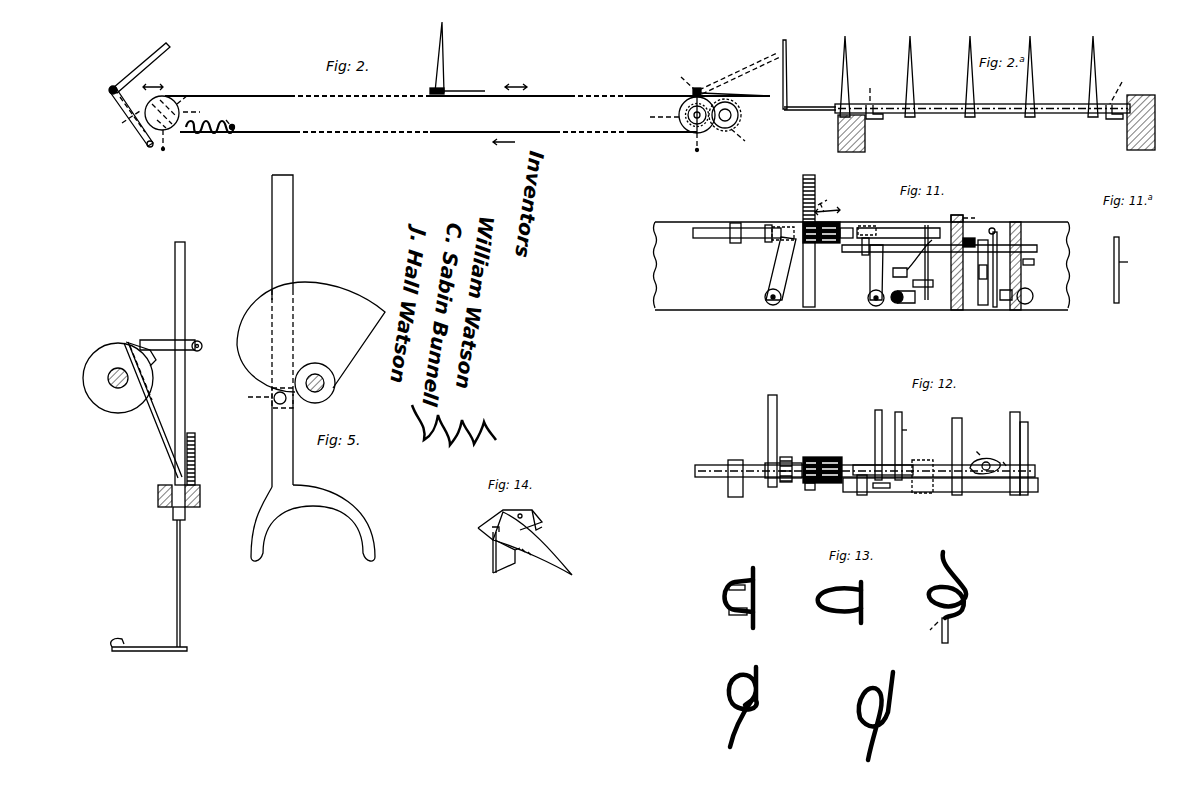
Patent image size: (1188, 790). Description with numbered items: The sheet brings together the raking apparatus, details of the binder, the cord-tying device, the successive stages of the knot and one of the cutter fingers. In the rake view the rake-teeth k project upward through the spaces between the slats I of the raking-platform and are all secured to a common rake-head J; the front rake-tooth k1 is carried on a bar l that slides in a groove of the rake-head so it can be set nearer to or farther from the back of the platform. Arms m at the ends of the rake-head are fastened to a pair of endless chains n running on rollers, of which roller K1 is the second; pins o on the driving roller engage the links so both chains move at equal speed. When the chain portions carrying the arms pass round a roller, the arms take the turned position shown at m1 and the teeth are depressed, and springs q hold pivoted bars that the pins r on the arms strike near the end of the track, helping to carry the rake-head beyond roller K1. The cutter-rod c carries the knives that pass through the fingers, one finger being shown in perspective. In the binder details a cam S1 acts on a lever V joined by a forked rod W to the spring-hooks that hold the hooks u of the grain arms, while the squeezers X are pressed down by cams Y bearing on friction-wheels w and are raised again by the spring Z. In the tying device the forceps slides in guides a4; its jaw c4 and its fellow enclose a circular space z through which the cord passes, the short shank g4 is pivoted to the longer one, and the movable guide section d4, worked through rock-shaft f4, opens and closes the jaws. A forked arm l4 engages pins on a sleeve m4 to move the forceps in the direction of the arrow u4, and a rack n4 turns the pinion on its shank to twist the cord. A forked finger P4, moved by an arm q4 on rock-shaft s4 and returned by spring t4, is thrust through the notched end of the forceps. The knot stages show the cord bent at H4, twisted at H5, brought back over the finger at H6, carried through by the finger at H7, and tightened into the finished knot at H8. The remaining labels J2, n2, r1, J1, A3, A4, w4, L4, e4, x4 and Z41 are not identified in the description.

In FIG. 2, the endless chains n is at (467, 107).
In FIG. 2, the roller K1 is at (161, 107).
In FIG. 2, the lifting arm J2 is at (135, 68).
In FIG. 2, the pulley arm n2 is at (131, 117).
In FIG. 2, the pivot r' r1 is at (124, 120).
In FIG. 2, the cutter-rod c is at (184, 94).
In FIG. 2, the pins o is at (428, 136).
In FIG. 2, the springs q is at (210, 121).
In FIG. 2, the rake-teeth k is at (444, 57).
In FIG. 2A, the rake-teeth k is at (969, 76).
In FIG. 2, the rake-head J is at (431, 92).
In FIG. 2, the arms of the rake-head m is at (485, 114).
In FIG. 2, the drive arm hub J' J1 is at (733, 74).
In FIG. 2, the arms of the rake-head in turned position m1 is at (680, 81).
In FIG. 2, the drive gear A3 is at (719, 114).
In FIG. 2, the driven gear A4 is at (743, 140).
In FIG. 2A, the slats I is at (982, 106).
In FIG. 2A, the bar l is at (810, 102).
In FIG. 2A, the front rake-tooth k1 is at (790, 74).
In FIG. 2A, the pin r is at (996, 94).
In FIG. 5, the forked rod W is at (155, 446).
In FIG. 5, the circular space z is at (191, 459).
In FIG. 5, the cam S1 is at (119, 377).
In FIG. 5, the lever V is at (171, 340).
In FIG. 5, the hooks u is at (153, 410).
In FIG. 5, the squeezers X is at (313, 368).
In FIG. 5, the cams Y is at (311, 342).
In FIG. 5, the friction-wheels w is at (264, 398).
In FIG. 14, the spring Z is at (525, 542).
In FIG. 11, the guide a4 is at (743, 233).
In FIG. 12, the guide a4 is at (865, 478).
In FIG. 11, the direction arrow u4 is at (821, 241).
In FIG. 12, the direction arrow u4 is at (868, 475).
In FIG. 11, the travel direction w4 is at (833, 210).
In FIG. 11, the spring t4 is at (780, 271).
In FIG. 12, the spring t4 is at (894, 445).
In FIG. 11, the bar L4 is at (938, 240).
In FIG. 11, the lever e4 is at (891, 275).
In FIG. 12, the lever e4 is at (1004, 461).
In FIG. 11, the movable guide section d4 is at (916, 262).
In FIG. 11, the post x4 is at (966, 259).
In FIG. 11, the forceps jaw c4 is at (992, 266).
In FIG. 11, the rock-shaft f4 is at (1016, 277).
In FIG. 11, the short shank g4 is at (1025, 296).
In FIG. 12, the short shank g4 is at (953, 456).
In FIG. 11A, the forked finger P4 is at (1126, 270).
In FIG. 12, the forked arm l4 is at (773, 441).
In FIG. 12, the sleeve m4 is at (783, 470).
In FIG. 12, the arm q4 is at (789, 465).
In FIG. 12, the rack n4 is at (940, 480).
In FIG. 12, the cam Z4' Z41 is at (985, 459).
In FIG. 12, the rock-shaft s4 is at (1023, 453).
In FIG. 13, the bent cord H4 is at (737, 593).
In FIG. 13, the twisted cord H5 is at (839, 595).
In FIG. 13, the cord over finger H6 is at (951, 597).
In FIG. 13, the cord carried by finger H7 is at (743, 702).
In FIG. 13, the completed knot H8 is at (876, 711).